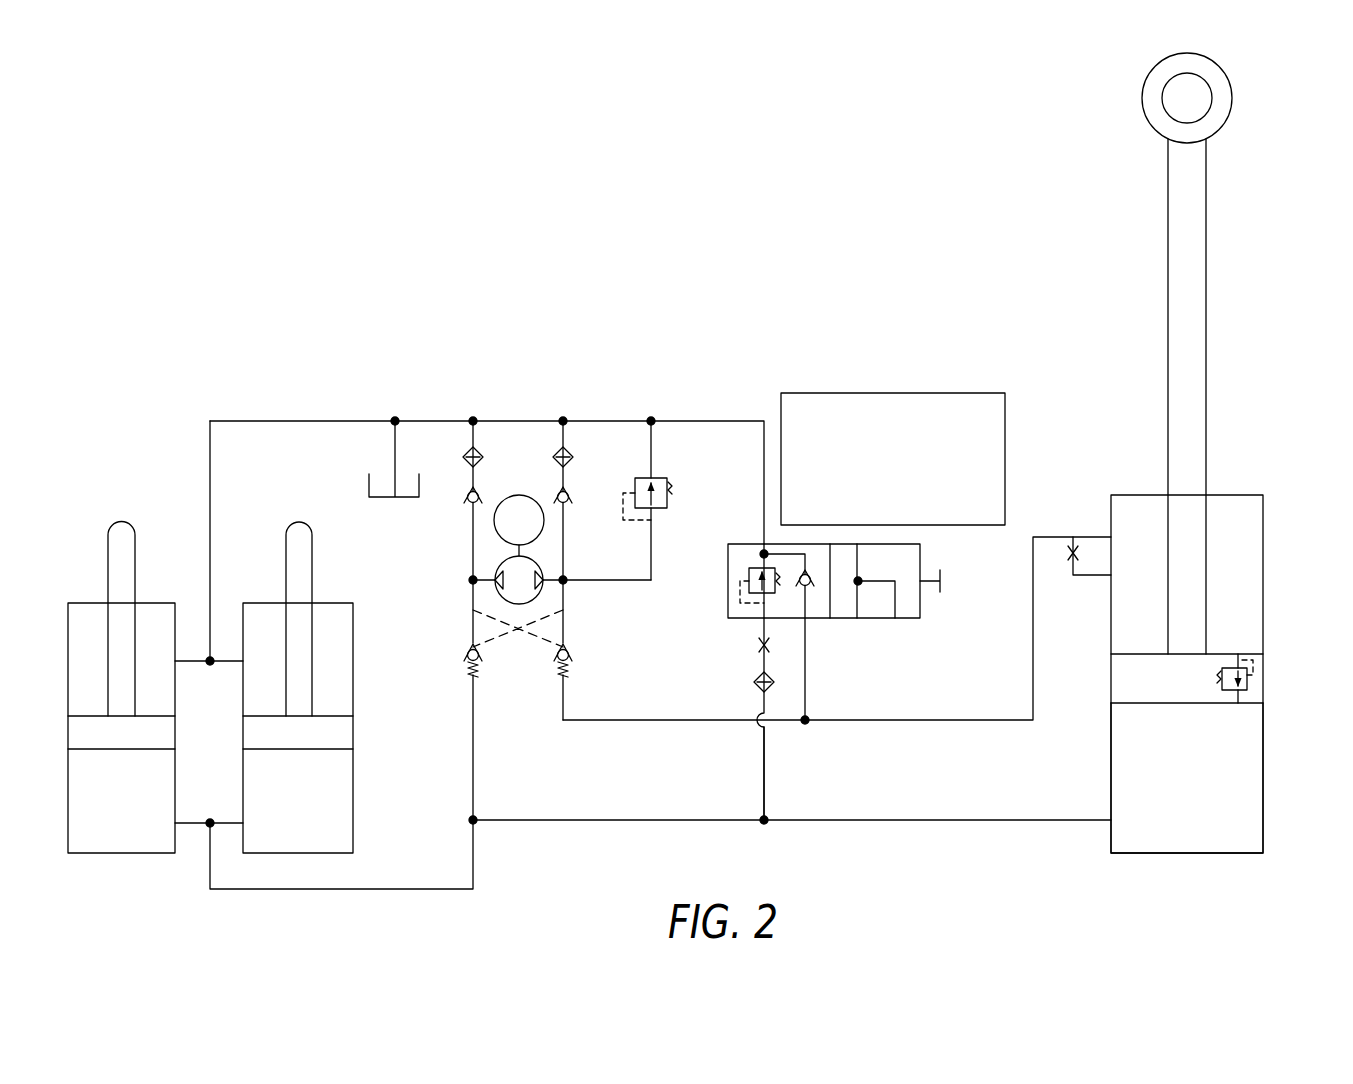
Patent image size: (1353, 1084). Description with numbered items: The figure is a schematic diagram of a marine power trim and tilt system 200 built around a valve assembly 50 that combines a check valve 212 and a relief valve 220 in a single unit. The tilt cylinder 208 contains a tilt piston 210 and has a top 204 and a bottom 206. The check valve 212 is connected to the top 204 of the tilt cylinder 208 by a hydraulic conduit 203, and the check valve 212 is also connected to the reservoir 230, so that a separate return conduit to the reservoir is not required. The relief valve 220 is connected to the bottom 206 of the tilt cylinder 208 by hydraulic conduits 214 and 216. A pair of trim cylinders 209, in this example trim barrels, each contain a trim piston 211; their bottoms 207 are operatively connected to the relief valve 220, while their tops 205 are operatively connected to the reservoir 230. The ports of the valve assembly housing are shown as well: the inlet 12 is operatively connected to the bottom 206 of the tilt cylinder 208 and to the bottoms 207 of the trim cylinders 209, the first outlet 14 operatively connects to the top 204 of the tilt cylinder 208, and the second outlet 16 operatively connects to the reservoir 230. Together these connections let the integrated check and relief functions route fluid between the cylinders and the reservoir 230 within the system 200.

The marine power trim and tilt system 200 is at (562, 268).
The reservoir 230 is at (387, 470).
The relief valve 220 is at (713, 580).
The trim cylinders 209 is at (177, 695).
The tops of the trim cylinders 205 is at (265, 627).
The bottoms of the trim cylinders 207 is at (278, 832).
The trim pistons 211 is at (123, 737).
The valve assembly 50 is at (713, 622).
The second outlet 16 is at (764, 552).
The inlet 12 is at (758, 620).
The first outlet 14 is at (807, 620).
The check valve 212 is at (810, 586).
The hydraulic conduit 203 is at (918, 720).
The hydraulic conduit 216 is at (765, 767).
The hydraulic conduit 214 is at (832, 820).
The tilt cylinder 208 is at (1263, 608).
The top of the tilt cylinder 204 is at (1240, 540).
The tilt piston 210 is at (1180, 685).
The bottom of the tilt cylinder 206 is at (1240, 788).